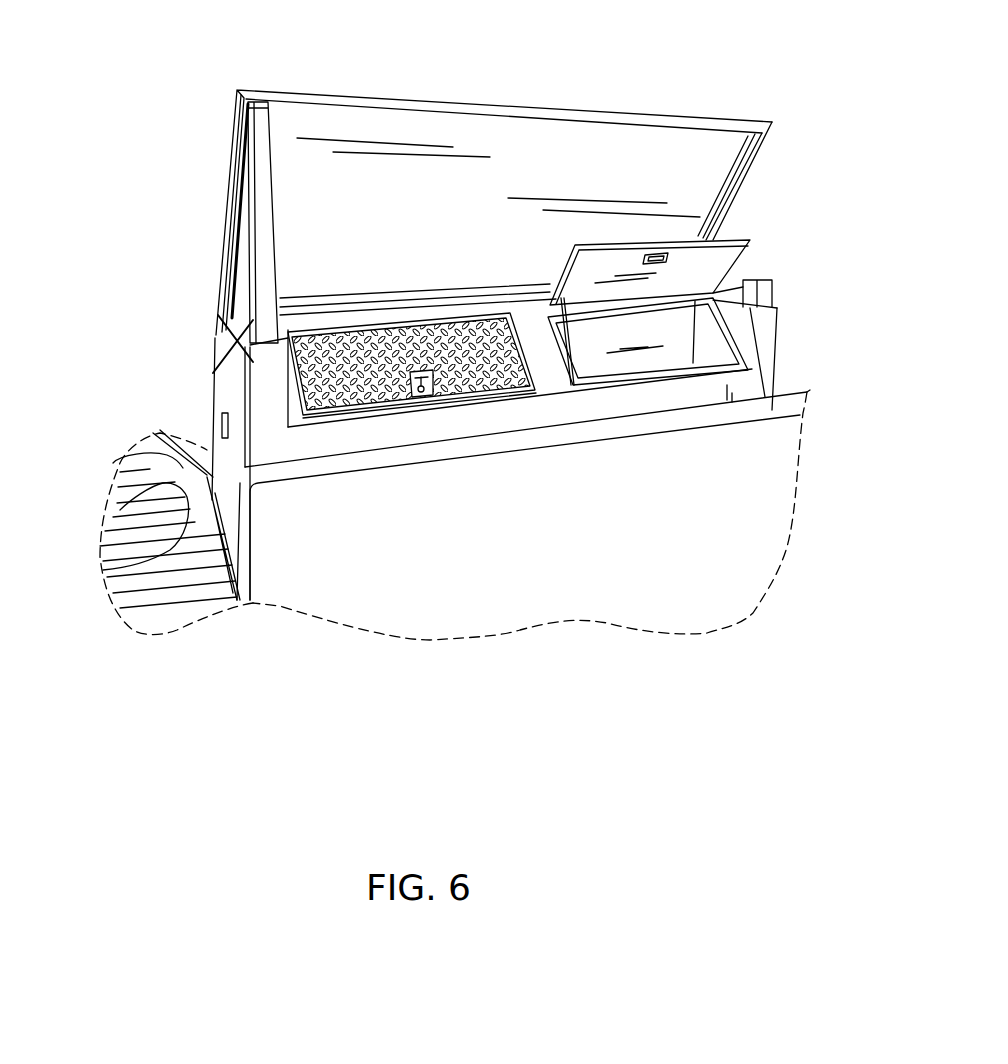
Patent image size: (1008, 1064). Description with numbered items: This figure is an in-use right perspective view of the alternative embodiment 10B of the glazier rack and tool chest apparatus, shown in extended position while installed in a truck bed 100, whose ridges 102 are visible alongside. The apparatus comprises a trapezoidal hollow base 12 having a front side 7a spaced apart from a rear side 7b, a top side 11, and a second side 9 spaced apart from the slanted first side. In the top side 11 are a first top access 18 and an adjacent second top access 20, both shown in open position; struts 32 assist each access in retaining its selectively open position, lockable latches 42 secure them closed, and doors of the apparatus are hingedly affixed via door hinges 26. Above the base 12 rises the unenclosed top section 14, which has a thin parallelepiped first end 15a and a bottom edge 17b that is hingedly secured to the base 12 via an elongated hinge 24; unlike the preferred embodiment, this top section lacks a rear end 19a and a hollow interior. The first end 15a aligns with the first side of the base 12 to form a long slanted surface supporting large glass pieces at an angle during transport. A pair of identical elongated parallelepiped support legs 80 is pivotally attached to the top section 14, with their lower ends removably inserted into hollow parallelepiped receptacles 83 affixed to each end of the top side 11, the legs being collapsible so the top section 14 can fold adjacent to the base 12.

The top side 11 is at (314, 96).
The latches 42 is at (410, 345).
The struts 32 is at (548, 298).
The second top access 20 is at (563, 268).
The support legs 80 is at (760, 157).
The top section 14 is at (764, 198).
The rear end 19a is at (745, 215).
The first end 15a is at (237, 249).
The first top access 18 is at (312, 320).
The elongated hinge 24 is at (238, 308).
The bottom edge 17b is at (252, 325).
The door hinges 26 is at (693, 302).
The second side 9 is at (561, 394).
The rear side 7b is at (743, 330).
The alternative embodiment 10B is at (551, 566).
The receptacles 83 is at (222, 375).
The ridges 102 is at (188, 481).
The truck bed 100 is at (165, 452).
The base 12 is at (168, 512).
The front side 7a is at (195, 567).